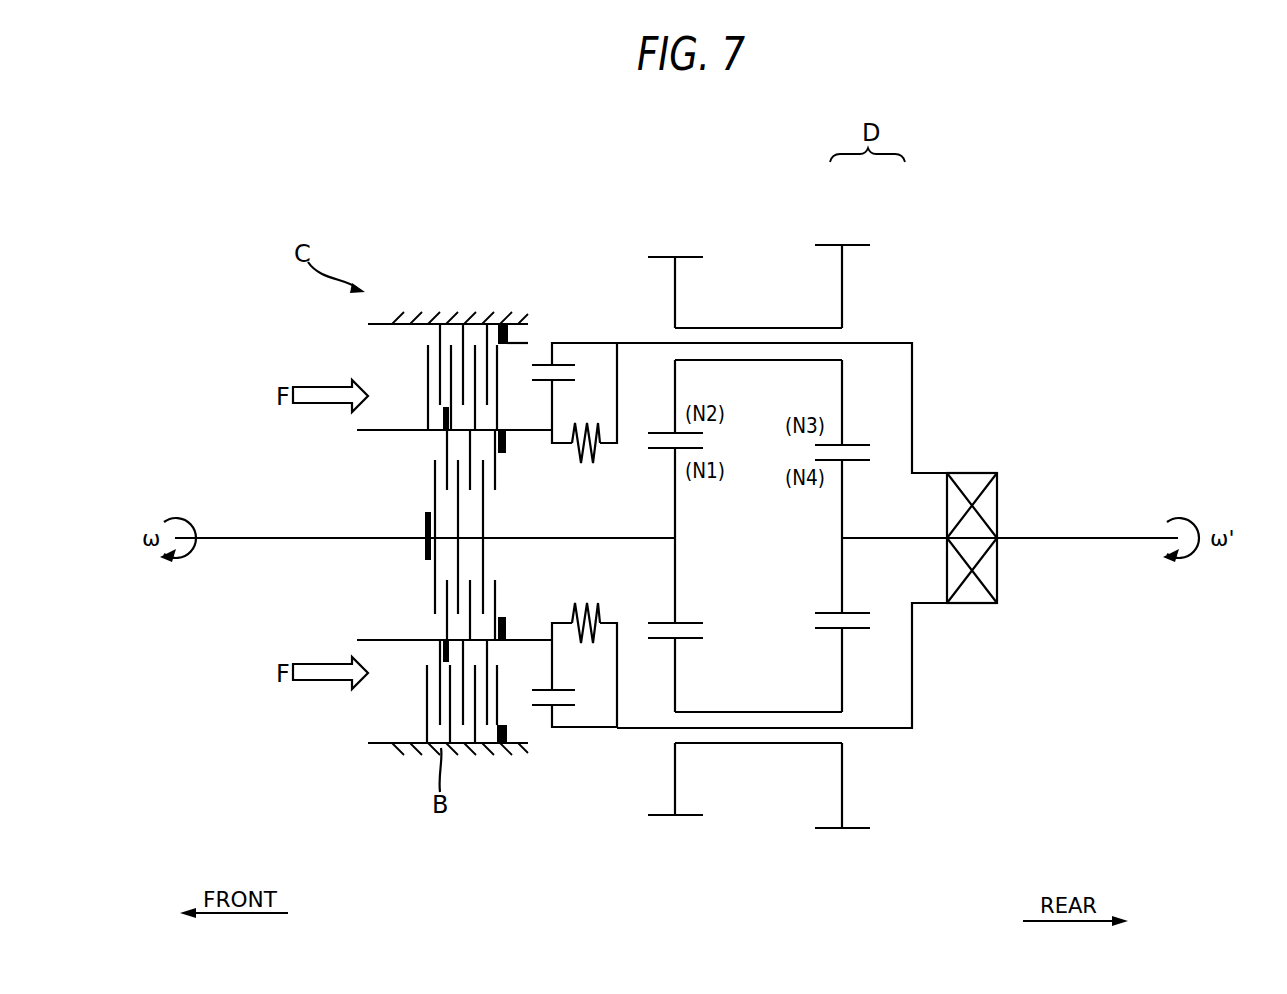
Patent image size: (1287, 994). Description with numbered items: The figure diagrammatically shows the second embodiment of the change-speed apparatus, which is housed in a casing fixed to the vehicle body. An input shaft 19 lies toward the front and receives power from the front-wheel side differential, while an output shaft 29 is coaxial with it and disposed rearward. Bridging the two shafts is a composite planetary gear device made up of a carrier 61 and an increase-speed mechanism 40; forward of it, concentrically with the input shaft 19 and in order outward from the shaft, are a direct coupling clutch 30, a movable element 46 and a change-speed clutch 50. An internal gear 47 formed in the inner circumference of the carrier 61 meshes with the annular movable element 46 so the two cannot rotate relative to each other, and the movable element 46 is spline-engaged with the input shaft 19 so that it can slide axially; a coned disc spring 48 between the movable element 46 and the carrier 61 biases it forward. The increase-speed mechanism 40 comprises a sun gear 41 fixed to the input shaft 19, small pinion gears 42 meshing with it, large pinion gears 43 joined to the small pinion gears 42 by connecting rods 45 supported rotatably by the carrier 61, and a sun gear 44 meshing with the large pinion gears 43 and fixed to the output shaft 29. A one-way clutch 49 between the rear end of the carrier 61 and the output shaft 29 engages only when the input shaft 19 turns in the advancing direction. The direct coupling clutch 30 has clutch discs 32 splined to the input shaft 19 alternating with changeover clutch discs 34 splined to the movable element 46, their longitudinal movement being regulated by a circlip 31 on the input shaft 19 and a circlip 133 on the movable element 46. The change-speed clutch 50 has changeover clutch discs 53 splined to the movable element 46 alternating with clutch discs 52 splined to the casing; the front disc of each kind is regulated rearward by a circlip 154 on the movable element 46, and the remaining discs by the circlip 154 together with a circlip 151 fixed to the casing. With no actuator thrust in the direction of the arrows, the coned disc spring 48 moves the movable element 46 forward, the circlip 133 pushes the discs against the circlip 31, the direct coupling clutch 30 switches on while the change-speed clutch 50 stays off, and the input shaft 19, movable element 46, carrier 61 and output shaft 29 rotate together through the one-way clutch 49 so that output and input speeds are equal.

The input shaft 19 is at (267, 540).
The output shaft 29 is at (1125, 538).
The direct coupling clutch 30 is at (368, 486).
The circlip 31 is at (425, 522).
The clutch discs 32 is at (484, 520).
The changeover clutch discs 34 is at (446, 443).
The increase-speed mechanism 40 is at (772, 274).
The sun gear 41 is at (678, 502).
The small pinion gears 42 is at (678, 382).
The large pinion gears 43 is at (845, 400).
The sun gear 44 is at (845, 502).
The connecting rods 45 is at (842, 332).
The movable element 46 is at (550, 428).
The internal gear 47 is at (566, 369).
The coned disc spring 48 is at (600, 462).
The one-way clutch 49 is at (997, 497).
The change-speed clutch 50 is at (366, 360).
The clutch discs 52 is at (468, 342).
The changeover clutch discs 53 is at (425, 348).
The carrier 61 is at (913, 382).
The circlip 133 is at (507, 452).
The circlip 151 is at (512, 343).
The circlip 154 is at (442, 415).